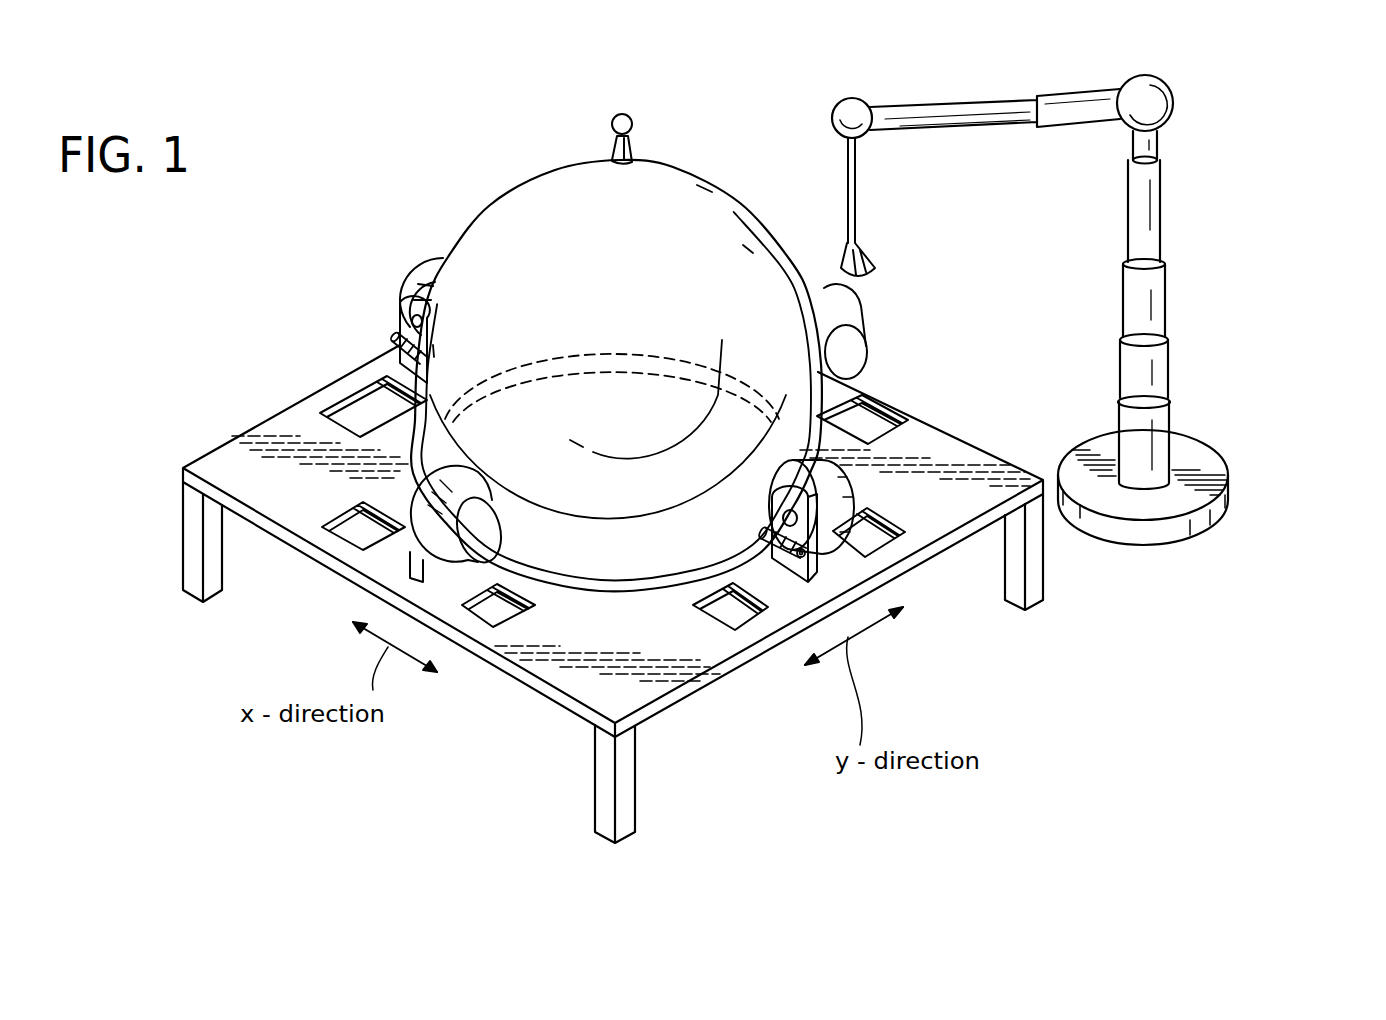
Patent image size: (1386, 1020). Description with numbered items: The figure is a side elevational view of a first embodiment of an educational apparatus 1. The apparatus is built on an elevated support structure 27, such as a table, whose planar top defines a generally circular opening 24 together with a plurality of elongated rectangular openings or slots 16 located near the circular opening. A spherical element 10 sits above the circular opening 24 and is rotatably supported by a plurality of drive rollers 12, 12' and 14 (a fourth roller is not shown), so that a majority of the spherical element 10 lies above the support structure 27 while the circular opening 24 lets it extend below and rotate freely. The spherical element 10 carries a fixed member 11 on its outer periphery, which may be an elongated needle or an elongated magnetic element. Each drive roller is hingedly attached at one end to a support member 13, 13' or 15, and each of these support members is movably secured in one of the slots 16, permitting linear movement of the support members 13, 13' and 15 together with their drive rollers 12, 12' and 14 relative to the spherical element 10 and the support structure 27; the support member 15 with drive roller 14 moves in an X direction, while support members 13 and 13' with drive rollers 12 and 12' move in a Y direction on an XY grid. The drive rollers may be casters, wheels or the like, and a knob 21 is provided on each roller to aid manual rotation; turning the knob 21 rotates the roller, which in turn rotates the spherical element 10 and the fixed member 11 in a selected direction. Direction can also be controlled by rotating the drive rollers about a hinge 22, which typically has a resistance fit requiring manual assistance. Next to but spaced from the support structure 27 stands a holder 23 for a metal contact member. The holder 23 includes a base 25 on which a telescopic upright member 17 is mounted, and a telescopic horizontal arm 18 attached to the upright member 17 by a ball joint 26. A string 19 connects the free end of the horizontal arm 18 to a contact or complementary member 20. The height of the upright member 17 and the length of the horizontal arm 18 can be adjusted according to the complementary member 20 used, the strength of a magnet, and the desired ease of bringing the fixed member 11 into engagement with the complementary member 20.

The educational apparatus 1 is at (372, 150).
The spherical element 10 is at (513, 195).
The fixed member 11 is at (616, 150).
The drive roller 12 is at (887, 419).
The drive roller 12' is at (385, 265).
The support member 13 is at (827, 615).
The support member 13' is at (339, 327).
The drive roller 14 is at (433, 487).
The support member 15 is at (410, 560).
The elongated opening 16 is at (483, 612).
The telescopic upright member 17 is at (1152, 215).
The telescopic horizontal arm 18 is at (938, 108).
The string 19 is at (850, 172).
The complementary member 20 is at (865, 263).
The knob 21 is at (412, 310).
The hinge 22 is at (796, 566).
The holder 23 is at (1215, 236).
The circular opening 24 is at (670, 568).
The base 25 is at (1168, 532).
The ball joint 26 is at (1152, 105).
The support structure 27 is at (220, 470).